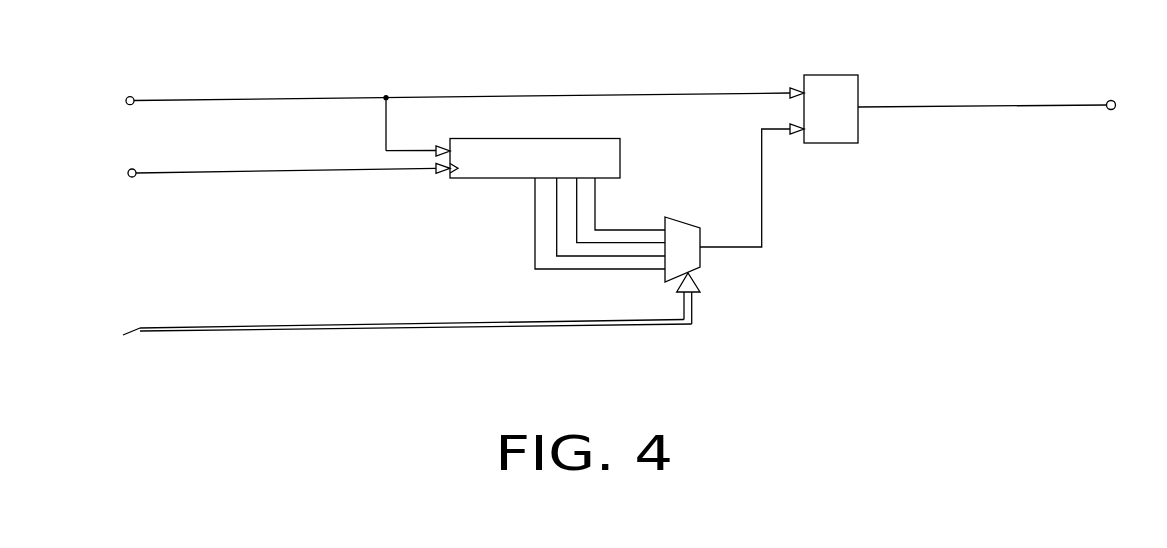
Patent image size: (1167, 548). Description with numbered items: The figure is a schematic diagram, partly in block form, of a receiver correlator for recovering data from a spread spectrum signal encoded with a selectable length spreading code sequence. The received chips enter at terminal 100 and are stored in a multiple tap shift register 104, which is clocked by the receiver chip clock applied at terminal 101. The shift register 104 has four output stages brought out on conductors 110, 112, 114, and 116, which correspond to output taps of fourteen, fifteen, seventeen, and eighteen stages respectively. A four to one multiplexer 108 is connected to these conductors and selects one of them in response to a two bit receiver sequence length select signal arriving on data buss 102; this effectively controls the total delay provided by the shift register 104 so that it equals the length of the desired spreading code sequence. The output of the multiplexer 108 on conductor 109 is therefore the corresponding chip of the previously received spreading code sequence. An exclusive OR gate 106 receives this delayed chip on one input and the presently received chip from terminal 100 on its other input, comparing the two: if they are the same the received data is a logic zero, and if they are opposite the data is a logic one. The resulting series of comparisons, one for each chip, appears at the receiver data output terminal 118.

The terminal 100 is at (127, 97).
The terminal 101 is at (128, 170).
The data buss 102 is at (140, 328).
The multiple tap shift register 104 is at (550, 171).
The exclusive OR gate 106 is at (845, 130).
The 4 to 1 multiplexer 108 is at (680, 219).
The conductor 109 is at (762, 219).
The conductor 110 is at (535, 200).
The conductor 112 is at (557, 213).
The conductor 114 is at (595, 243).
The conductor 116 is at (628, 230).
The receiver data output terminal 118 is at (1114, 101).